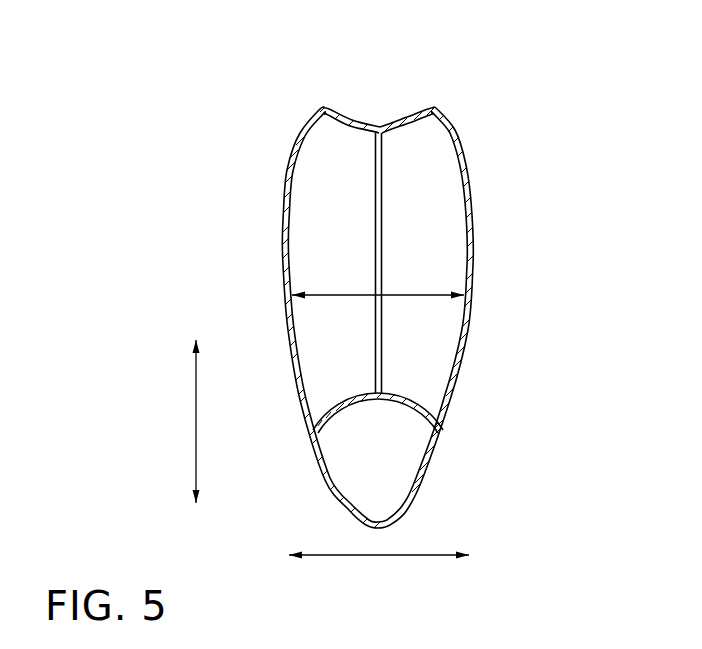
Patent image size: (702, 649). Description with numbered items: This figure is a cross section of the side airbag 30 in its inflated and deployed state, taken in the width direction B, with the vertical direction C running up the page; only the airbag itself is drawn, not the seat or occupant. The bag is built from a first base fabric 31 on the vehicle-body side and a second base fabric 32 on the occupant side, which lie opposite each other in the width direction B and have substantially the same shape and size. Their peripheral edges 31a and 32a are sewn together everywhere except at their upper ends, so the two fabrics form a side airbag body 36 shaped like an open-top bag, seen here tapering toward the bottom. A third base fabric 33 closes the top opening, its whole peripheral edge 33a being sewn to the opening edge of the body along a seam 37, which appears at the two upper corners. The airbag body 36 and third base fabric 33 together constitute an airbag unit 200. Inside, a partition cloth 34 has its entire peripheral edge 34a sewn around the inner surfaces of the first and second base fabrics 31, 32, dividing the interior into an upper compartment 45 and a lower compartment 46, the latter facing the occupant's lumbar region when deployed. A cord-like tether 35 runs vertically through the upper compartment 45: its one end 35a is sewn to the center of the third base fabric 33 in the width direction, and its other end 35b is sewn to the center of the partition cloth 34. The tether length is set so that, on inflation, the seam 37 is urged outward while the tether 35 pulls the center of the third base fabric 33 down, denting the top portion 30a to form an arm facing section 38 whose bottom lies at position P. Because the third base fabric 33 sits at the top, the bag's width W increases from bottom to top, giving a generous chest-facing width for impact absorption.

The side airbag 30 is at (477, 139).
The top portion 30a is at (409, 117).
The first base fabric 31 is at (476, 278).
The peripheral edge of the first base fabric 31a is at (384, 525).
The second base fabric 32 is at (282, 270).
The peripheral edge of the second base fabric 32a is at (362, 527).
The third base fabric 33 is at (354, 114).
The peripheral edge of the third base fabric 33a is at (324, 106).
The partition cloth 34 is at (421, 404).
The peripheral edge of the partition cloth 34a is at (309, 430).
The tether 35 is at (384, 219).
The one end of the tether 35a is at (375, 133).
The other end of the tether 35b is at (377, 390).
The side airbag body 36 is at (482, 198).
The seam 37 is at (323, 107).
The arm facing section 38 is at (381, 124).
The upper compartment 45 is at (446, 329).
The lower compartment 46 is at (418, 462).
The airbag unit 200 is at (486, 245).
The width W is at (416, 292).
The bottom position of the hollow P is at (377, 138).
The vertical direction C is at (195, 418).
The width direction B is at (380, 557).